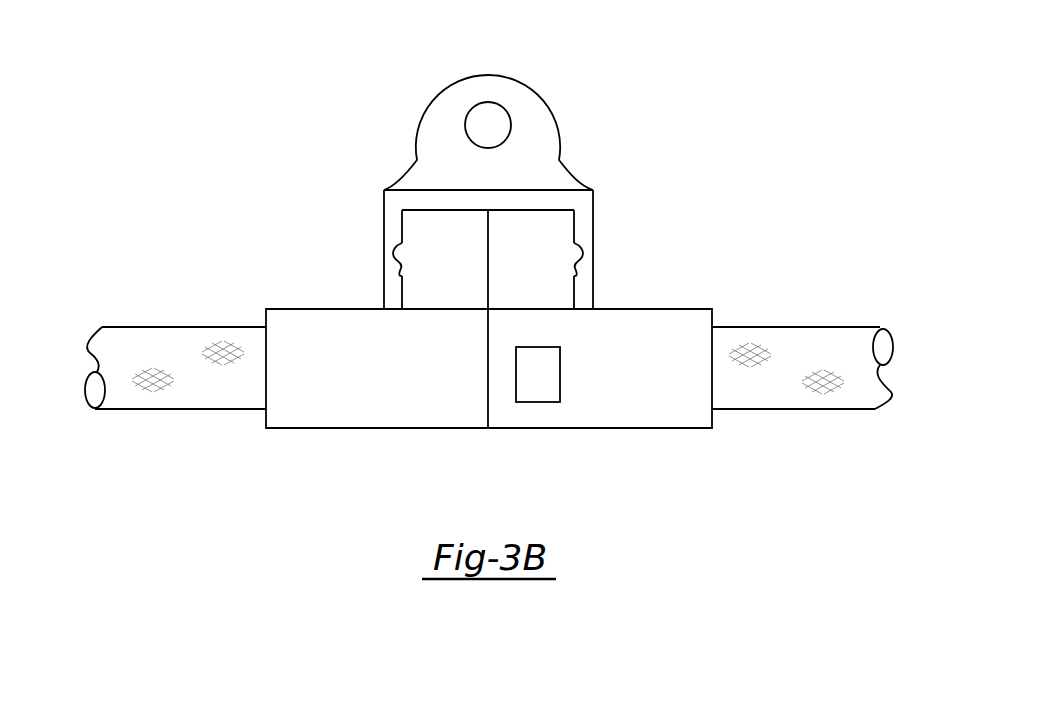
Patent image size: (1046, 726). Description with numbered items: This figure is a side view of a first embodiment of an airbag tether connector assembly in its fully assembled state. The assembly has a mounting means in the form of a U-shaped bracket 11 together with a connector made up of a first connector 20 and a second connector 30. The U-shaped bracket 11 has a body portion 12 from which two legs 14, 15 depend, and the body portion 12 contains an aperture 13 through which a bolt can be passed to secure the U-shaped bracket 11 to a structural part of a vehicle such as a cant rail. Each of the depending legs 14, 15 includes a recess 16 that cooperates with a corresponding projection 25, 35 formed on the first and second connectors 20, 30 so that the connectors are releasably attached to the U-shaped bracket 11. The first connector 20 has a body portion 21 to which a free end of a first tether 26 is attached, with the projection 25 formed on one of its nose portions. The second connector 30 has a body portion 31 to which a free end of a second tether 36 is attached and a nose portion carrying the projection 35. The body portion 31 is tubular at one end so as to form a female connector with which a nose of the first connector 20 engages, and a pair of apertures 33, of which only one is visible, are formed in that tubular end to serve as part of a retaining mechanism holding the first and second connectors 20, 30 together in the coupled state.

The U-shaped bracket 11 is at (562, 157).
The body portion 12 is at (414, 157).
The aperture 13 is at (474, 108).
The leg 14 is at (384, 226).
The leg 15 is at (593, 226).
The recess 16 is at (394, 261).
The first connector 20 is at (296, 436).
The body portion 21 is at (367, 408).
The projection 25 is at (400, 253).
The first tether 26 is at (178, 409).
The second connector 30 is at (681, 436).
The body portion 31 is at (608, 408).
The aperture 33 is at (535, 386).
The projection 35 is at (576, 253).
The second tether 36 is at (790, 409).